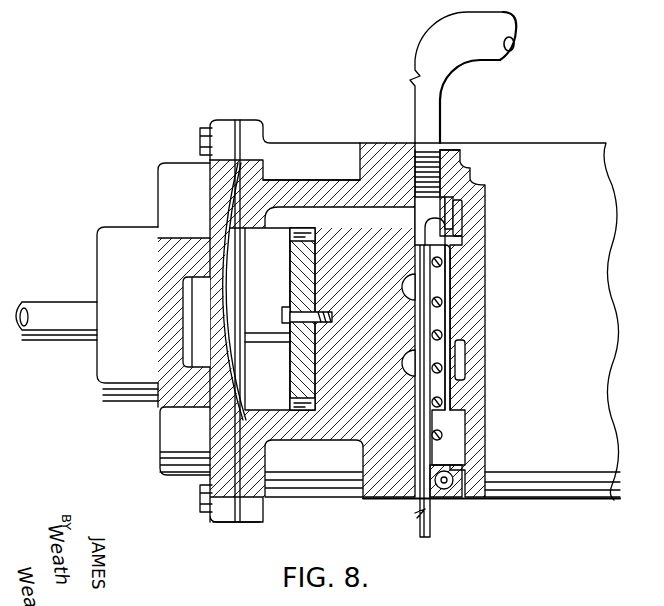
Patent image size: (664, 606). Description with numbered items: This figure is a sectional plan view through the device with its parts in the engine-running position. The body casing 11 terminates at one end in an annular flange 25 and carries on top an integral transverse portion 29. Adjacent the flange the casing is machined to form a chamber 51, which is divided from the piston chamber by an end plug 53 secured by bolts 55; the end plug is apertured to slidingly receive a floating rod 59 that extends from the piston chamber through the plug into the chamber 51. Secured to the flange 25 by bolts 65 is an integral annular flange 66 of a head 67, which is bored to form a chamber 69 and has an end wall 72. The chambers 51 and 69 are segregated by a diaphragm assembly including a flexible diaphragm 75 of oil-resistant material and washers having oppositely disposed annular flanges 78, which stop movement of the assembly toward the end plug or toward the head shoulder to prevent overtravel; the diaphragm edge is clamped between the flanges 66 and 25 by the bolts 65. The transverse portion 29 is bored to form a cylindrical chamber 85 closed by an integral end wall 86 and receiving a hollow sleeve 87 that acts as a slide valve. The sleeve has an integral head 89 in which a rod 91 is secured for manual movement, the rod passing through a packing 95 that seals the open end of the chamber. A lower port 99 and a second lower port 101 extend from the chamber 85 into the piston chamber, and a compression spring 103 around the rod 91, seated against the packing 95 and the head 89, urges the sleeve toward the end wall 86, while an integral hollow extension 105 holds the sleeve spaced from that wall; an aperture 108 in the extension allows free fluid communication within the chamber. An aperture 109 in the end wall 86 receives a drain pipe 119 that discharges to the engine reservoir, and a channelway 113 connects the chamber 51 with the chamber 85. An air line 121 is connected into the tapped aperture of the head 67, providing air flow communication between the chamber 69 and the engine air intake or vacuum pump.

The body casing 11 is at (616, 143).
The annular flange 25 is at (250, 133).
The transverse portion 29 is at (475, 190).
The chamber 51 is at (275, 405).
The end plug 53 is at (293, 275).
The bolts 55 is at (282, 315).
The floating rod 59 is at (255, 332).
The bolts 65 is at (200, 141).
The annular flange 66 is at (227, 512).
The head 67 is at (162, 190).
The chamber 69 is at (183, 287).
The end wall 72 is at (97, 270).
The flexible diaphragm 75 is at (230, 385).
The annular flanges 78 is at (192, 355).
The cylindrical chamber 85 is at (440, 233).
The end wall 86 is at (450, 152).
The hollow sleeve 87 is at (460, 320).
The head 89 is at (432, 230).
The rod 91 is at (430, 538).
The packing 95 is at (453, 496).
The lower port 99 is at (410, 362).
The second lower port 101 is at (410, 288).
The compression spring 103 is at (438, 403).
The hollow extension 105 is at (453, 207).
The aperture 108 is at (467, 223).
The aperture 109 is at (451, 136).
The channelway 113 is at (333, 218).
The drain pipe 119 is at (505, 35).
The air line 121 is at (22, 332).